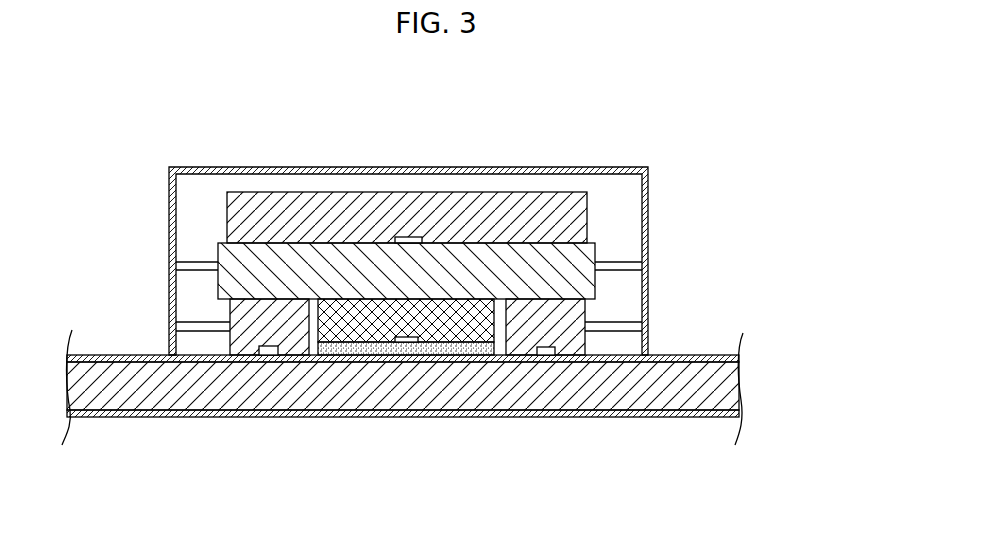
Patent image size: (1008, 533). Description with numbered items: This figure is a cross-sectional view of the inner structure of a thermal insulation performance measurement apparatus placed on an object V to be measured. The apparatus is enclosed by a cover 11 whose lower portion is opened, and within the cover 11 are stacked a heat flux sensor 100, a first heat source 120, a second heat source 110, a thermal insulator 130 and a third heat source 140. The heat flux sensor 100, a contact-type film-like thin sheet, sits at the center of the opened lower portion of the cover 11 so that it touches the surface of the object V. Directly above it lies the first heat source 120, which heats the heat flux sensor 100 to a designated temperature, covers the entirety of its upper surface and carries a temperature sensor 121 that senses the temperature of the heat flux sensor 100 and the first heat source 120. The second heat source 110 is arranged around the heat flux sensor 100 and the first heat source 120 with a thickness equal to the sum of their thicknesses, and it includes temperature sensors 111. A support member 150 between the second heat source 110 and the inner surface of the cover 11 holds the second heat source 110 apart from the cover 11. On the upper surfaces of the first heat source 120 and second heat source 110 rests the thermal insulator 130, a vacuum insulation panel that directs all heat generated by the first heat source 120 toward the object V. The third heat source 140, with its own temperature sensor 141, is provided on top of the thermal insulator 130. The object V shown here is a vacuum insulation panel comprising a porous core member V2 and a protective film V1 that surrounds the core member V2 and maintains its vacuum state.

The cover 11 is at (648, 178).
The heat flux sensor 100 is at (467, 352).
The second heat source 110 is at (245, 345).
The temperature sensors 111 is at (268, 352).
The first heat source 120 is at (335, 340).
The temperature sensor 121 is at (407, 340).
The thermal insulator 130 is at (592, 255).
The third heat source 140 is at (585, 215).
The temperature sensor 141 is at (410, 237).
The support member 150 is at (193, 325).
The object to be measured V is at (682, 355).
The protective film V1 is at (740, 357).
The porous core member V2 is at (736, 388).